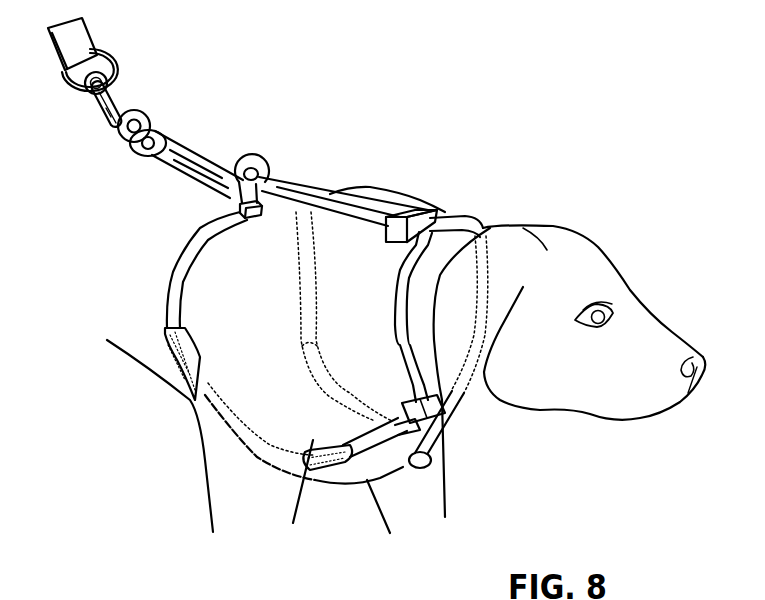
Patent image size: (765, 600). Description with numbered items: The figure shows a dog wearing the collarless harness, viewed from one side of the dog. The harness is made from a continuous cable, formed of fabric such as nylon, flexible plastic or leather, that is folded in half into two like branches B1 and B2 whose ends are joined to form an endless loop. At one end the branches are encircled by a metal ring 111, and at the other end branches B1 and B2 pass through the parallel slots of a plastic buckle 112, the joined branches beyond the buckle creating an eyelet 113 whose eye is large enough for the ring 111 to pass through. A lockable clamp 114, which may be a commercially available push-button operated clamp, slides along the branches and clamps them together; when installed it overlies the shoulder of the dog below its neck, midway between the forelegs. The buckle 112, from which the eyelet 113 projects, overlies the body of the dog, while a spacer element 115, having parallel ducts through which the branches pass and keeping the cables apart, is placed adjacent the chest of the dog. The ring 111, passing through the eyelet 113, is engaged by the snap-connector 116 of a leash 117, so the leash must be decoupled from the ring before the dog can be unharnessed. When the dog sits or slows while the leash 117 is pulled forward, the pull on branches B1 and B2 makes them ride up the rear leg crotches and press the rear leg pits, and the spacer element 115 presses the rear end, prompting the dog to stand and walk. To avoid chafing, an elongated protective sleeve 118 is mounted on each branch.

The metal ring 111 is at (157, 134).
The plastic buckle 112 is at (238, 203).
The eyelet 113 is at (255, 164).
The lockable clamp 114 is at (421, 208).
The spacer element 115 is at (428, 417).
The snap-connector 116 is at (143, 113).
The leash 117 is at (115, 80).
The elongated protective sleeve 118 is at (431, 462).
The branch B1 is at (177, 273).
The branch B2 is at (474, 217).